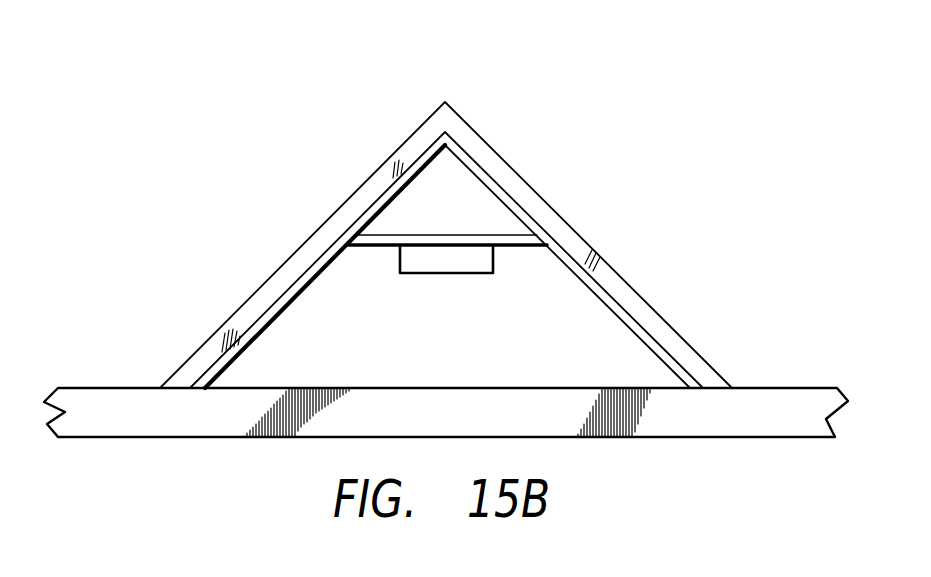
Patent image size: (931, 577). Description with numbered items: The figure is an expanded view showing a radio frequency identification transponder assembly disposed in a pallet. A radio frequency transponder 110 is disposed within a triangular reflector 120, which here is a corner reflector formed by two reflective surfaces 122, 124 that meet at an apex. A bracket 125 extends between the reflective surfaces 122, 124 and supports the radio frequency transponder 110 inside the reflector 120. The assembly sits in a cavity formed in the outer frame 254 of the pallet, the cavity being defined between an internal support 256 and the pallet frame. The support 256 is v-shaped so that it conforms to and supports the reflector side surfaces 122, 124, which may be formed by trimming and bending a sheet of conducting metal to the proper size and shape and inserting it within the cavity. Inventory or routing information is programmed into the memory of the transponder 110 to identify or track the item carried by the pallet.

The radio frequency transponder 110 is at (457, 273).
The triangular reflector 120 is at (603, 297).
The reflective surface 122 is at (415, 178).
The reflective surface 124 is at (517, 203).
The bracket 125 is at (392, 235).
The outer frame 254 is at (782, 392).
The support 256 is at (678, 342).